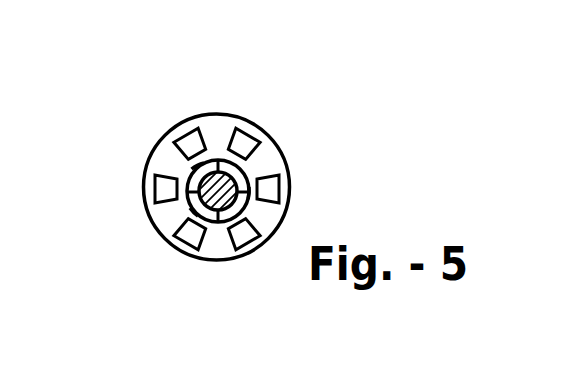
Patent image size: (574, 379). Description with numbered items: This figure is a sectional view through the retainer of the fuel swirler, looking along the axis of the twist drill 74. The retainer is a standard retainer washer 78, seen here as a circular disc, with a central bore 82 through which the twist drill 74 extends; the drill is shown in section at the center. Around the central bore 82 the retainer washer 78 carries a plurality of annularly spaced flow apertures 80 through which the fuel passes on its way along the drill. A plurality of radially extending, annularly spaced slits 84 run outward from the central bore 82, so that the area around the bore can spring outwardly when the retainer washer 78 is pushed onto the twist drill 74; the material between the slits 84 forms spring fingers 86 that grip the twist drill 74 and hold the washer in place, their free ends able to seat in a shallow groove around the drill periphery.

The twist drill 74 is at (263, 184).
The retainer washer 78 is at (218, 172).
The flow apertures 80 is at (210, 185).
The central bore 82 is at (260, 191).
The slits 84 is at (215, 225).
The spring fingers 86 is at (220, 200).